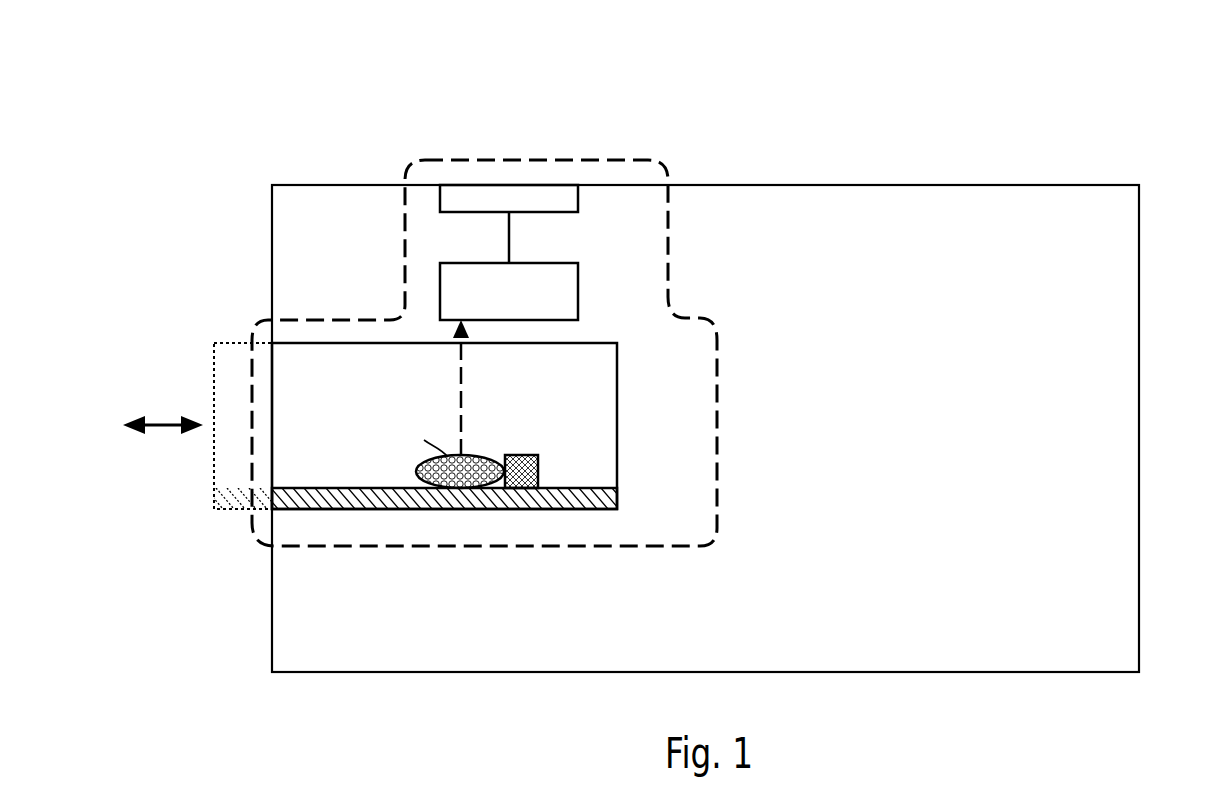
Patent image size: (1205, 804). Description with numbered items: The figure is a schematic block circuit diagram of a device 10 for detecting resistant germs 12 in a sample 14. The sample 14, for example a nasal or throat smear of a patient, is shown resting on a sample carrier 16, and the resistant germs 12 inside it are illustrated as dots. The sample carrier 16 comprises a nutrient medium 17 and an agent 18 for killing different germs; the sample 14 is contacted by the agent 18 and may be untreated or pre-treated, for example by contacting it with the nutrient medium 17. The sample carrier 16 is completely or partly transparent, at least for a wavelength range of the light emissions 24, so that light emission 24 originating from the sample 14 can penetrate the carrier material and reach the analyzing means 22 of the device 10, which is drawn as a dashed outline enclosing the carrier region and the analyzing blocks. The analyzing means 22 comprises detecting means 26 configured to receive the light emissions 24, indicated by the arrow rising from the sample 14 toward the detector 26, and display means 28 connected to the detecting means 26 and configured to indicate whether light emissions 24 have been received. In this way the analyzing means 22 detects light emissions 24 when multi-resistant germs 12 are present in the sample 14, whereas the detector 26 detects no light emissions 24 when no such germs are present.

The device 10 is at (1110, 90).
The resistant germs 12 is at (430, 470).
The sample 14 is at (424, 440).
The sample carrier 16 is at (617, 425).
The nutrient medium 17 is at (521, 455).
The agent 18 is at (305, 488).
The analyzing means 22 is at (538, 145).
The light emission 24 is at (461, 366).
The detecting means 26 is at (578, 292).
The display means 28 is at (578, 198).